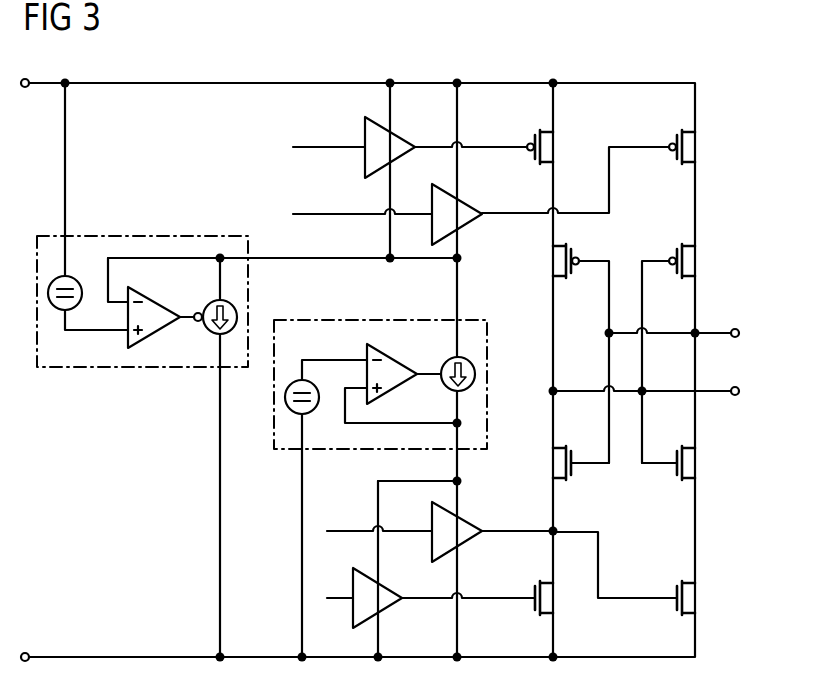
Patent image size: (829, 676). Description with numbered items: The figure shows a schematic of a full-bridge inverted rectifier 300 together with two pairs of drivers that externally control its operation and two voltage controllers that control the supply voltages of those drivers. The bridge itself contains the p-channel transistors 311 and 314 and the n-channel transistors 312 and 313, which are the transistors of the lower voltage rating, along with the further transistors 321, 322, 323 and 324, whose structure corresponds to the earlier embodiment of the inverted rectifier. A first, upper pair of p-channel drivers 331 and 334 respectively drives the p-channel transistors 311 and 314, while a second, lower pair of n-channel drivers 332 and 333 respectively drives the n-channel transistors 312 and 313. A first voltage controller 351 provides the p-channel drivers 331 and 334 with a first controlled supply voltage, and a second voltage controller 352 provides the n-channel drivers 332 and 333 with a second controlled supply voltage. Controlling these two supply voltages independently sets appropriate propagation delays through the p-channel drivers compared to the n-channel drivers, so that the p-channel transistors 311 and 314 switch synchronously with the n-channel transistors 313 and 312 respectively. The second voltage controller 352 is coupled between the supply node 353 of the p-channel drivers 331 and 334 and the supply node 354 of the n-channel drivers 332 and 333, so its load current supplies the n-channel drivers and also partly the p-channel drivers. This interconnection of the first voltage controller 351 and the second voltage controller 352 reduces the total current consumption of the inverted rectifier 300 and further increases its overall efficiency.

The full-bridge inverted rectifier 300 is at (727, 138).
The p-channel transistor 311 is at (532, 138).
The n-channel transistor 312 is at (532, 606).
The n-channel transistor 313 is at (675, 591).
The p-channel transistor 314 is at (675, 139).
The transistor 321 is at (567, 263).
The transistor 322 is at (566, 465).
The transistor 323 is at (688, 466).
The transistor 324 is at (675, 253).
The p-channel driver 331 is at (400, 134).
The n-channel driver 332 is at (390, 581).
The n-channel driver 333 is at (458, 548).
The p-channel driver 334 is at (468, 201).
The first voltage controller 351 is at (165, 236).
The second voltage controller 352 is at (327, 320).
The supply node of the p-channel drivers 353 is at (460, 259).
The supply node of the n-channel drivers 354 is at (460, 482).